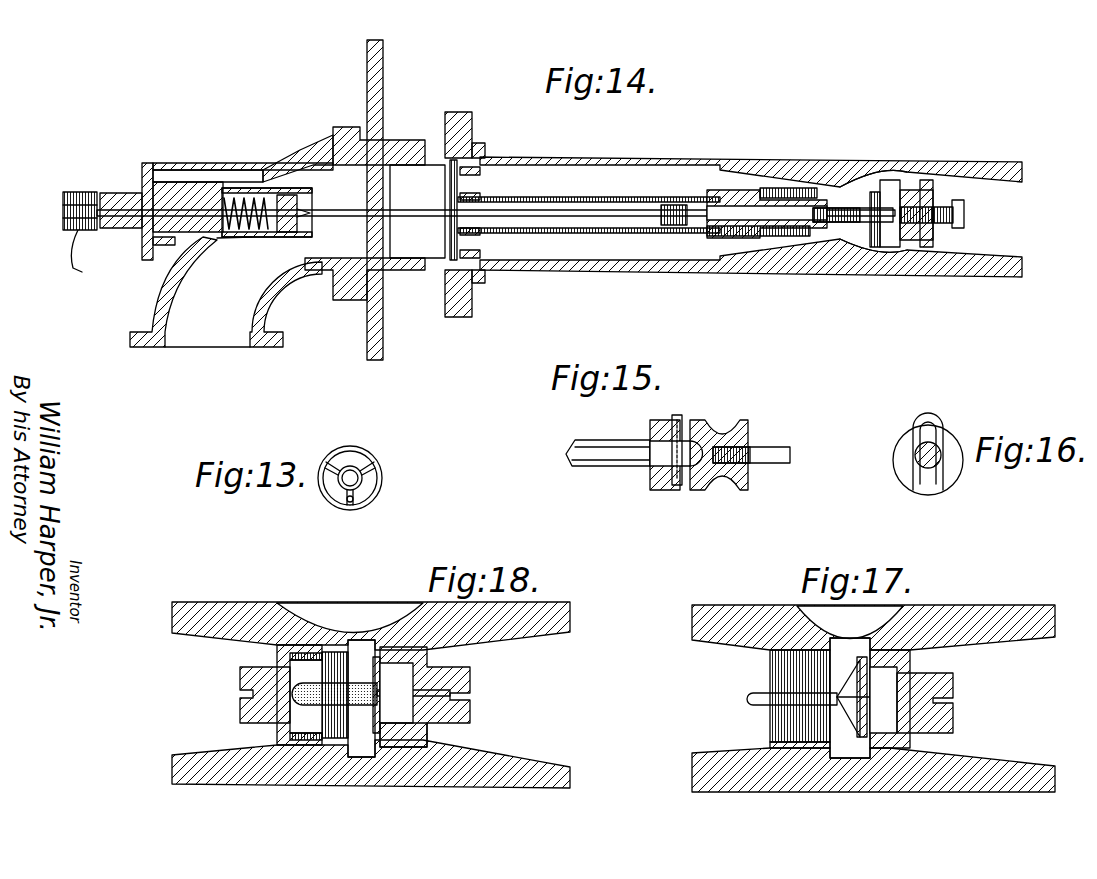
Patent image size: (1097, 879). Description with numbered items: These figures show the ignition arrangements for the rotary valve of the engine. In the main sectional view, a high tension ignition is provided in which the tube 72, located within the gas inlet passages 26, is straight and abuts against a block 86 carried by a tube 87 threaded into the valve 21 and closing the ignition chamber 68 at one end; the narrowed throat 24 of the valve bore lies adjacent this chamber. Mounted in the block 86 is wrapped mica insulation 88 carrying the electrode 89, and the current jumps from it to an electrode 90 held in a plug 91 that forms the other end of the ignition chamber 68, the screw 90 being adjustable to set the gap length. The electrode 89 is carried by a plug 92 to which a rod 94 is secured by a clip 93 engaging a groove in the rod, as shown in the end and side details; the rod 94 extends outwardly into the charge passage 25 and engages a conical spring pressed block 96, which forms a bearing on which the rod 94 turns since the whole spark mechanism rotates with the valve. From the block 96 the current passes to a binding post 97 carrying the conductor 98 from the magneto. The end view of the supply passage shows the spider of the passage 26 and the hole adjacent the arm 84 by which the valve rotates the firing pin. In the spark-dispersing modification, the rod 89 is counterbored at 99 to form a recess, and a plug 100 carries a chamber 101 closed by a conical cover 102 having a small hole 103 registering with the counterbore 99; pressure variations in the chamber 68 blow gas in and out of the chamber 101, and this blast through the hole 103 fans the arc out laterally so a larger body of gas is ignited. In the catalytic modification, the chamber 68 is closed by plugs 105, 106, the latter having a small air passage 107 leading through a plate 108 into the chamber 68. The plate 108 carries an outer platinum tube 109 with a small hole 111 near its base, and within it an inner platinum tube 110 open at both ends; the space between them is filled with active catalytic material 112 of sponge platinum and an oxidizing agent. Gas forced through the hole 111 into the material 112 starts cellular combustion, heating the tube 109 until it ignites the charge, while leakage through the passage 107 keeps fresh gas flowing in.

In FIG. 14, the valve 21 is at (752, 160).
In FIG. 17, the valve 21 is at (993, 618).
In FIG. 14, the throat 24 is at (910, 170).
In FIG. 18, the throat 24 is at (371, 695).
In FIG. 17, the throat 24 is at (850, 622).
In FIG. 14, the charge passage 25 is at (213, 335).
In FIG. 14, the gas inlet passages 26 is at (473, 183).
In FIG. 13, the gas inlet passages 26 is at (335, 490).
In FIG. 14, the ignition chamber 68 is at (893, 250).
In FIG. 18, the ignition chamber 68 is at (378, 745).
In FIG. 17, the ignition chamber 68 is at (850, 698).
In FIG. 14, the tube 72 is at (566, 197).
In FIG. 13, the arm 84 is at (350, 503).
In FIG. 14, the block 86 is at (706, 191).
In FIG. 14, the tube 87 is at (790, 190).
In FIG. 14, the wrapped mica insulation 88 is at (793, 237).
In FIG. 14, the electrode 89 is at (850, 223).
In FIG. 15, the electrode 89 is at (770, 448).
In FIG. 17, the electrode 89 is at (785, 715).
In FIG. 14, the electrode screw 90 is at (964, 205).
In FIG. 14, the plug 91 is at (934, 237).
In FIG. 14, the plug 92 is at (666, 230).
In FIG. 15, the plug 92 is at (740, 420).
In FIG. 16, the plug 92 is at (905, 440).
In FIG. 15, the clip 93 is at (680, 414).
In FIG. 16, the clip 93 is at (930, 413).
In FIG. 14, the rod 94 is at (537, 214).
In FIG. 15, the rod 94 is at (612, 465).
In FIG. 16, the rod 94 is at (926, 457).
In FIG. 14, the conical spring pressed block 96 is at (305, 206).
In FIG. 14, the binding post 97 is at (62, 208).
In FIG. 14, the conductor 98 is at (90, 257).
In FIG. 17, the counter bore 99 is at (862, 695).
In FIG. 17, the plug 100 is at (955, 683).
In FIG. 17, the chamber 101 is at (875, 683).
In FIG. 17, the conical cover 102 is at (847, 680).
In FIG. 17, the hole 103 is at (875, 740).
In FIG. 18, the plug 105 is at (240, 713).
In FIG. 18, the plug 106 is at (471, 673).
In FIG. 18, the air passage 107 is at (452, 695).
In FIG. 18, the plate 108 is at (381, 670).
In FIG. 18, the outer platinum tube 109 is at (277, 655).
In FIG. 18, the inner platinum tube 110 is at (428, 737).
In FIG. 18, the hole 111 is at (351, 688).
In FIG. 18, the active catalytic material 112 is at (363, 717).